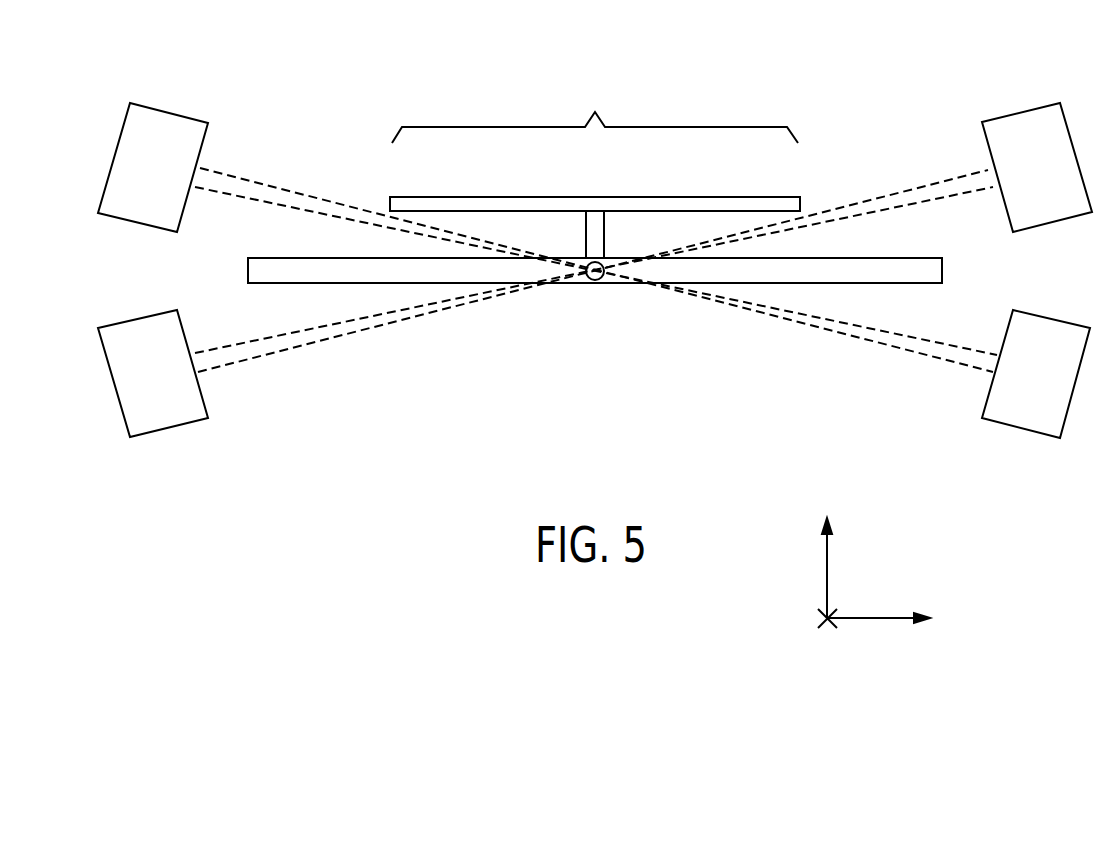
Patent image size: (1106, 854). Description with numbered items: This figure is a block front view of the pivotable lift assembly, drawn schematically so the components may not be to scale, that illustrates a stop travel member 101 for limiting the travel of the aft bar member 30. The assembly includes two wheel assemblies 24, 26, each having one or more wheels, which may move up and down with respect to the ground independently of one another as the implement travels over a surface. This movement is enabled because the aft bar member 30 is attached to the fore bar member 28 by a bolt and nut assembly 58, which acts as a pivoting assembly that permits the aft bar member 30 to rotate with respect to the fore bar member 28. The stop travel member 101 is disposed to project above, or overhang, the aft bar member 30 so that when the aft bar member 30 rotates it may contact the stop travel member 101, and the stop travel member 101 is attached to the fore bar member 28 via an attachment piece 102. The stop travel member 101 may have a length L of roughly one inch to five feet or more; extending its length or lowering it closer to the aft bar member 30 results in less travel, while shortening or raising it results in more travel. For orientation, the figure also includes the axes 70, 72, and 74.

The wheel assembly 24 is at (1018, 112).
The wheel assembly 26 is at (168, 112).
The fore bar member 28 is at (248, 273).
The aft bar member 30 is at (267, 192).
The bolt and nut assembly 58 is at (587, 273).
The axis 70 is at (872, 622).
The axis 72 is at (827, 573).
The axis 74 is at (820, 617).
The stop travel member 101 is at (593, 195).
The attachment piece 102 is at (605, 235).